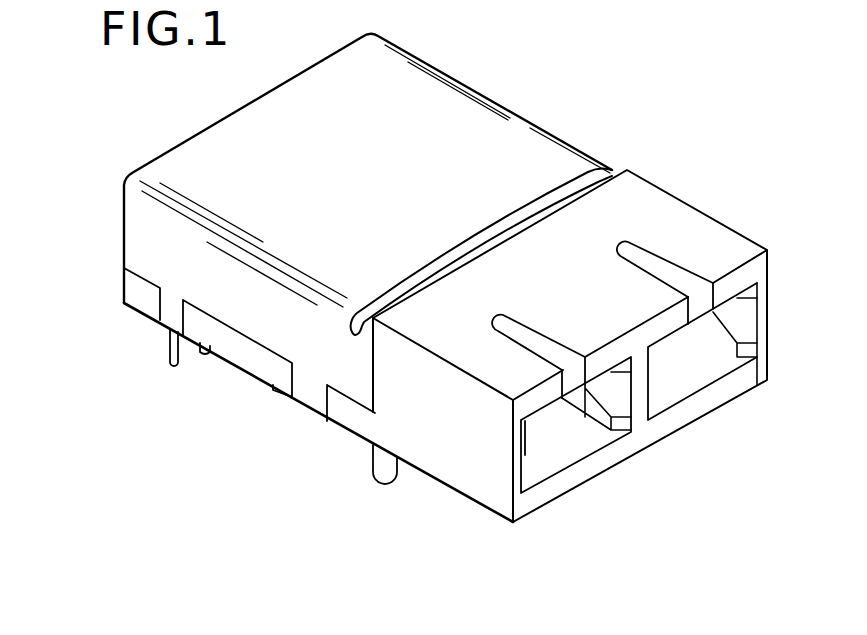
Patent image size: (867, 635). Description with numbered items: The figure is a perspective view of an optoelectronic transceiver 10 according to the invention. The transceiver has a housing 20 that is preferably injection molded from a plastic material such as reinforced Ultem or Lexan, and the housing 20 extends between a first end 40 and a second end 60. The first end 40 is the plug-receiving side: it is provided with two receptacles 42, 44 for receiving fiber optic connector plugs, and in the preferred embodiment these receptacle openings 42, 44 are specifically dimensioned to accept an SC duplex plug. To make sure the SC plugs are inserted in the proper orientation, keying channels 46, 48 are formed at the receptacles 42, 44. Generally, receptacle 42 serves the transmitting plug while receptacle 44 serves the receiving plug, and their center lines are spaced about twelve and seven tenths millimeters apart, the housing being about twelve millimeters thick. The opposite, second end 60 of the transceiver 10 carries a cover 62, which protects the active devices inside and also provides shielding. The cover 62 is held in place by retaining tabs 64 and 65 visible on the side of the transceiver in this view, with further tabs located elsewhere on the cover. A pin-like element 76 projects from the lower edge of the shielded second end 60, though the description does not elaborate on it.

The optoelectronic transceiver 10 is at (302, 448).
The housing 20 is at (352, 422).
The first end 40 is at (452, 457).
The receptacle 42 is at (568, 449).
The receptacle 44 is at (672, 383).
The keying channel 46 is at (520, 332).
The keying channel 48 is at (640, 253).
The second end 60 is at (222, 295).
The cover 62 is at (382, 170).
The retaining tab 64 is at (292, 398).
The retaining tab 65 is at (160, 303).
The grounding pin 76 is at (168, 348).